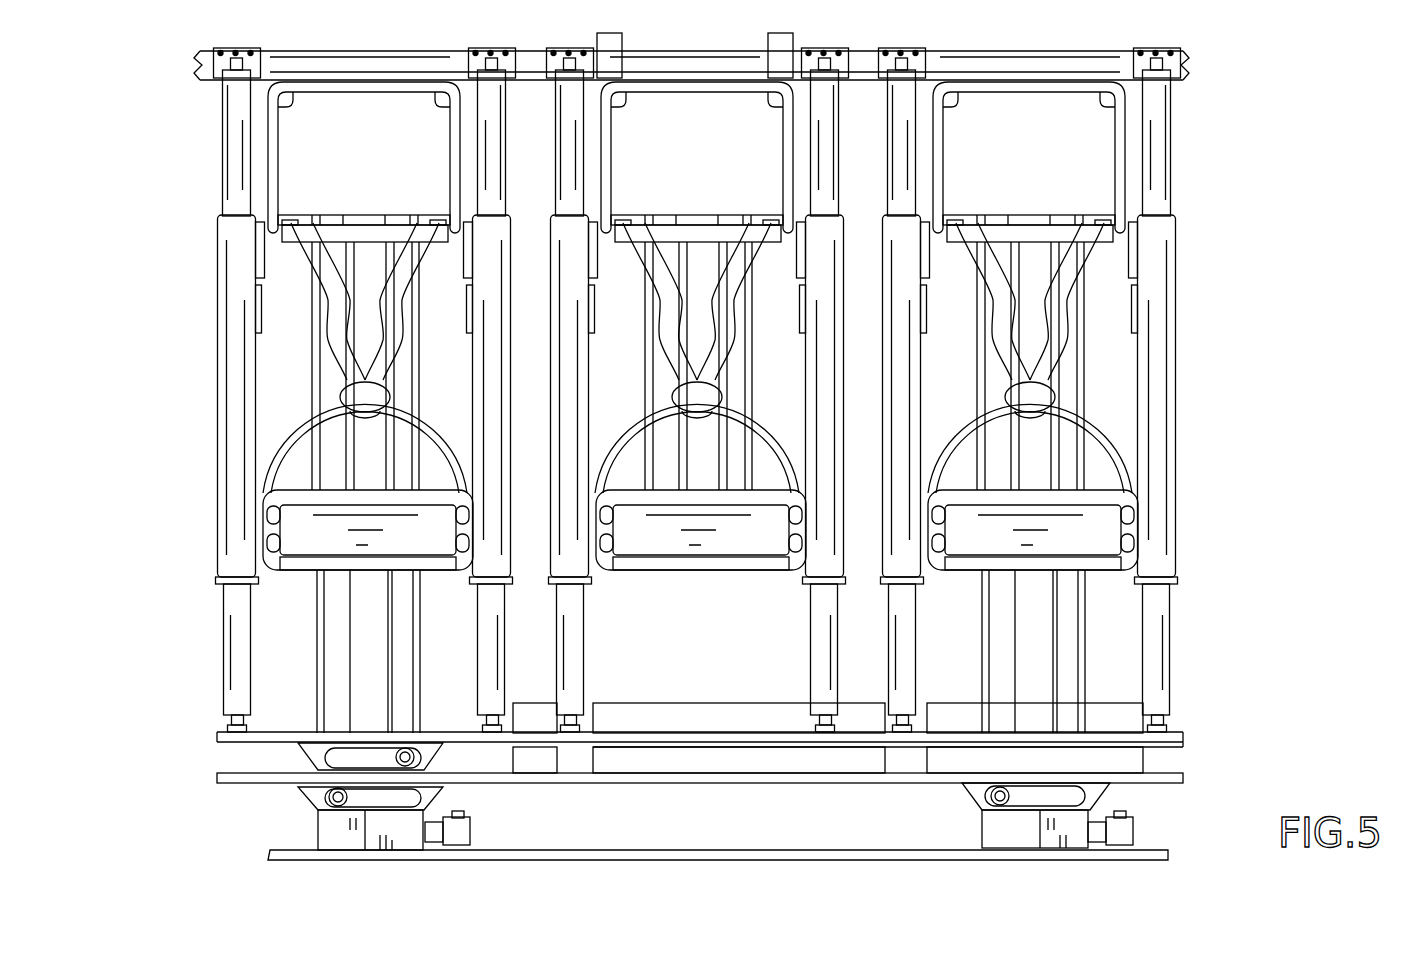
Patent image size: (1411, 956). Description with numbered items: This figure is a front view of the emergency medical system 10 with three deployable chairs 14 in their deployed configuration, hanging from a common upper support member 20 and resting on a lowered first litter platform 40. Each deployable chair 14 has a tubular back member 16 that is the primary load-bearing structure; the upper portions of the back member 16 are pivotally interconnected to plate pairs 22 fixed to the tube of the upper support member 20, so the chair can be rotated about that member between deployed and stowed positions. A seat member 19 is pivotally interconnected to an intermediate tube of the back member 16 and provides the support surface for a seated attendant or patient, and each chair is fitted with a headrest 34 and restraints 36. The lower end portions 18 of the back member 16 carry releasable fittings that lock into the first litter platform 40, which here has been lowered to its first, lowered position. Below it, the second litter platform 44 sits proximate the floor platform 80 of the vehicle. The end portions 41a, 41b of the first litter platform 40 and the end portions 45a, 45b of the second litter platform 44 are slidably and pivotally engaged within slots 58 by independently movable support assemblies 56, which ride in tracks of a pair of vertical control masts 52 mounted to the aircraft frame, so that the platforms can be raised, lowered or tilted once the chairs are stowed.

The emergency medical system 10 is at (700, 444).
The deployable chair 14 is at (708, 395).
The back member 16 is at (511, 360).
The lower end portions 18 is at (232, 725).
The seat member 19 is at (399, 550).
The upper support member 20 is at (188, 57).
The plate pairs 22 is at (218, 58).
The headrest 34 is at (346, 156).
The restraints 36 is at (354, 408).
The first litter platform 40 is at (716, 770).
The first end portion of the first litter platform 41a is at (212, 752).
The second end portion of the first litter platform 41b is at (1183, 752).
The second litter platform 44 is at (1183, 778).
The first end portion of the second litter platform 45a is at (240, 790).
The second end portion of the second litter platform 45b is at (1158, 790).
The vertical control masts 52 is at (428, 592).
The support assemblies 56 is at (408, 745).
The slots 58 is at (340, 750).
The floor platform 80 is at (757, 860).